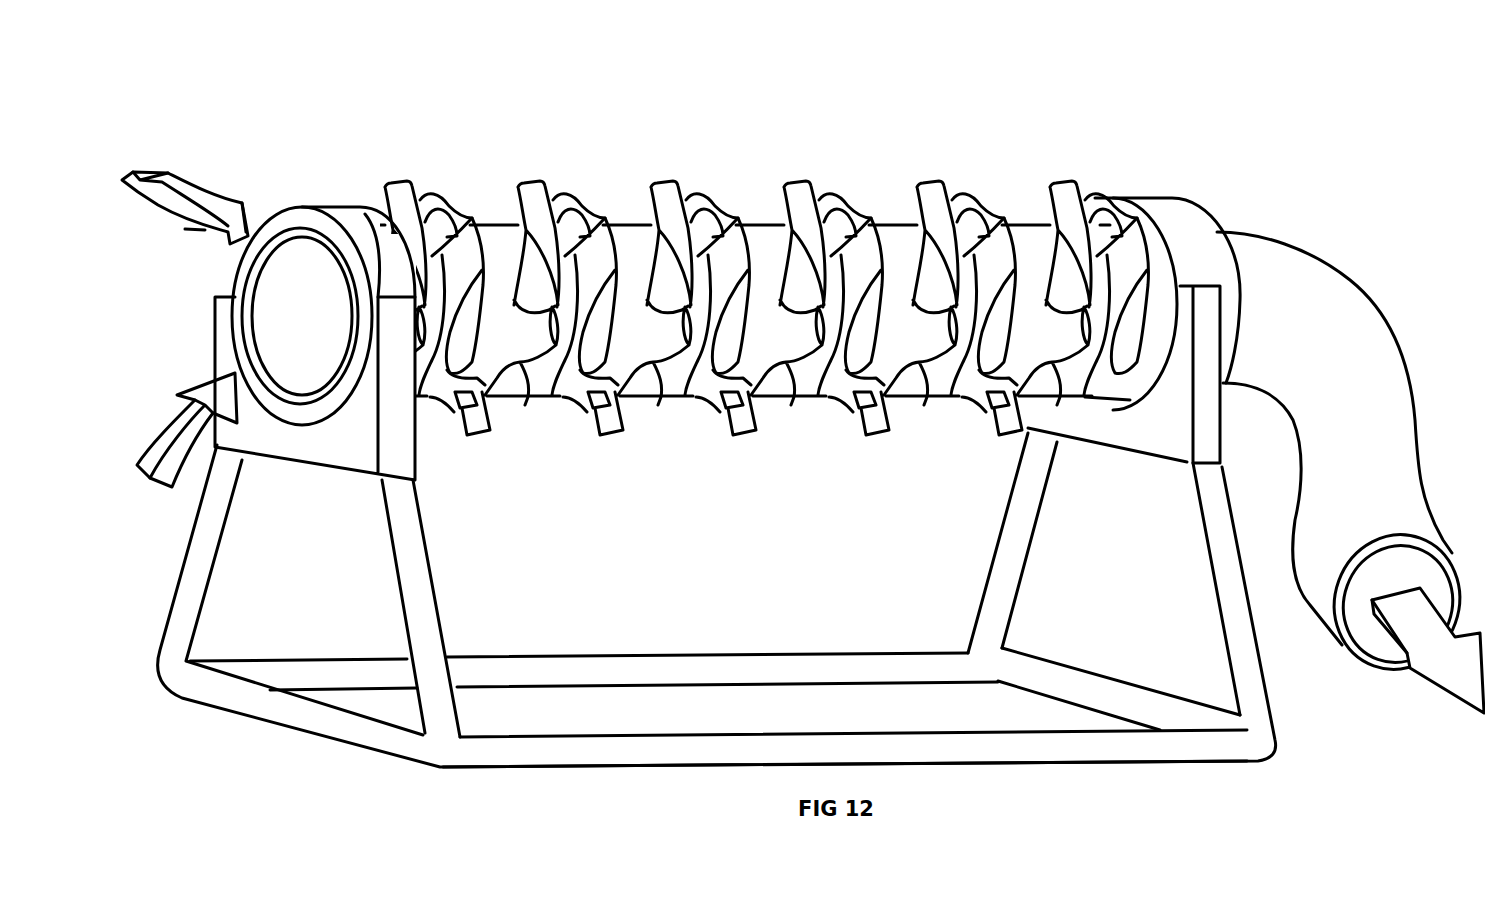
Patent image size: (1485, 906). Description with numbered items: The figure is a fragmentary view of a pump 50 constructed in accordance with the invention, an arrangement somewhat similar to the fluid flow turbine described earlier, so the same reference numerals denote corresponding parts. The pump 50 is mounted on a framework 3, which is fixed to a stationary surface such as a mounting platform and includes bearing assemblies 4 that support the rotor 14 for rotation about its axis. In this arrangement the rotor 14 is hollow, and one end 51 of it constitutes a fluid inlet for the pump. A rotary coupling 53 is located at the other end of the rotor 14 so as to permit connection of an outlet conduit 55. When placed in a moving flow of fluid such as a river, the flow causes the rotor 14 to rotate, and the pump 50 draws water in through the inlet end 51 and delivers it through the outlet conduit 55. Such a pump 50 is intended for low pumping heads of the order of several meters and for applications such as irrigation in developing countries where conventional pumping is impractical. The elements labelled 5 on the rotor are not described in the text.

The frame 3 is at (998, 515).
The end housing 4 is at (330, 209).
The blades 5 is at (503, 203).
The drum 14 is at (525, 398).
The drum body 50 is at (706, 468).
The inlet opening 51 is at (302, 293).
The outlet housing 53 is at (1150, 195).
The outlet hose 55 is at (1292, 233).